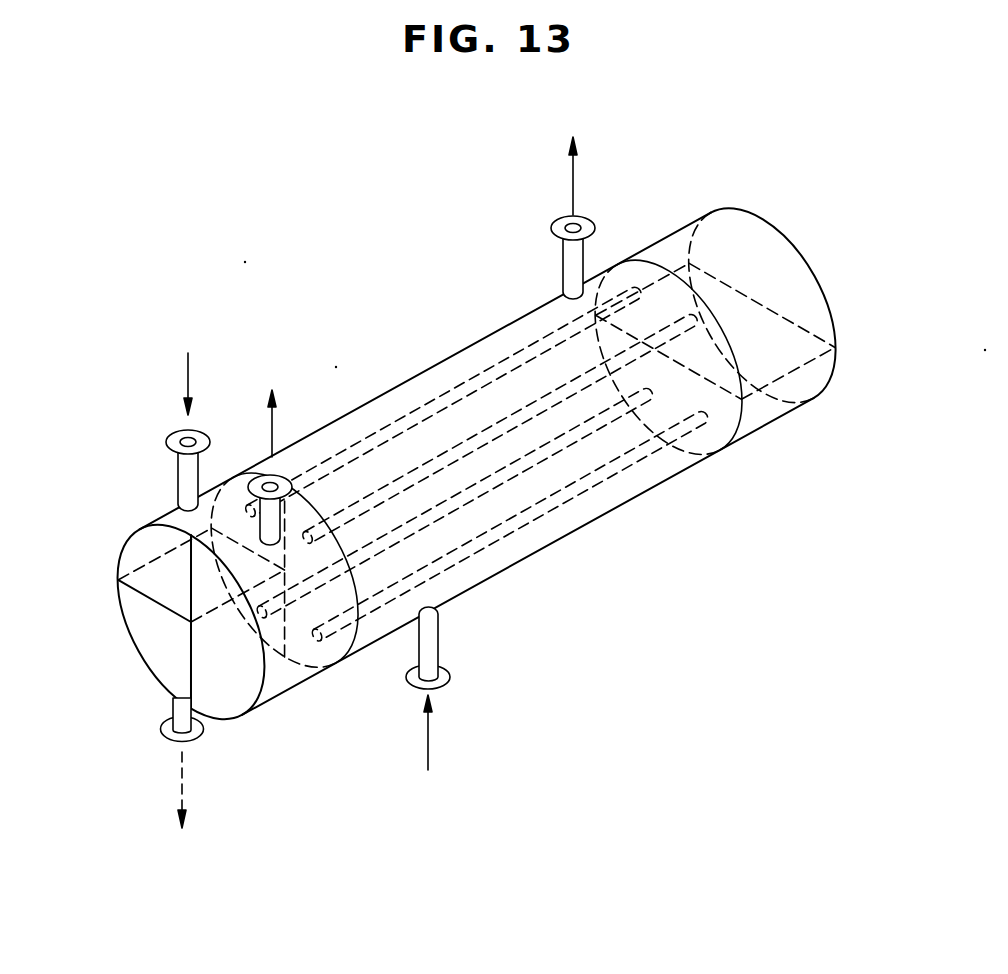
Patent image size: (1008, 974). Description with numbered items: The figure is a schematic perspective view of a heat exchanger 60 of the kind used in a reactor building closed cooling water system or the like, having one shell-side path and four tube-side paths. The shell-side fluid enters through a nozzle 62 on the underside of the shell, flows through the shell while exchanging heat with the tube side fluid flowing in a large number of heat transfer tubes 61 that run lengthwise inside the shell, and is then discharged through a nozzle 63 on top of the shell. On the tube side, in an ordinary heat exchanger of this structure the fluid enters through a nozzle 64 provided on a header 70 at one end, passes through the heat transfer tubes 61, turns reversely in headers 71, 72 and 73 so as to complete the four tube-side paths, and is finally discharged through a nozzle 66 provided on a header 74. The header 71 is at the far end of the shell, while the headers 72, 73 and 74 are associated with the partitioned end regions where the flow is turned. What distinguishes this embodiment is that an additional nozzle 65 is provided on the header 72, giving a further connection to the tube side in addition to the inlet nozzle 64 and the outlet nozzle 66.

The heat exchanger 60 is at (647, 493).
The heat transfer tubes 61 is at (555, 512).
The nozzle 62 is at (452, 672).
The nozzle 63 is at (550, 224).
The nozzle 64 is at (168, 442).
The nozzle 65 is at (288, 474).
The nozzle 66 is at (160, 730).
The header 70 is at (136, 553).
The header 71 is at (767, 246).
The header 72 is at (235, 682).
The header 73 is at (814, 378).
The header 74 is at (151, 636).